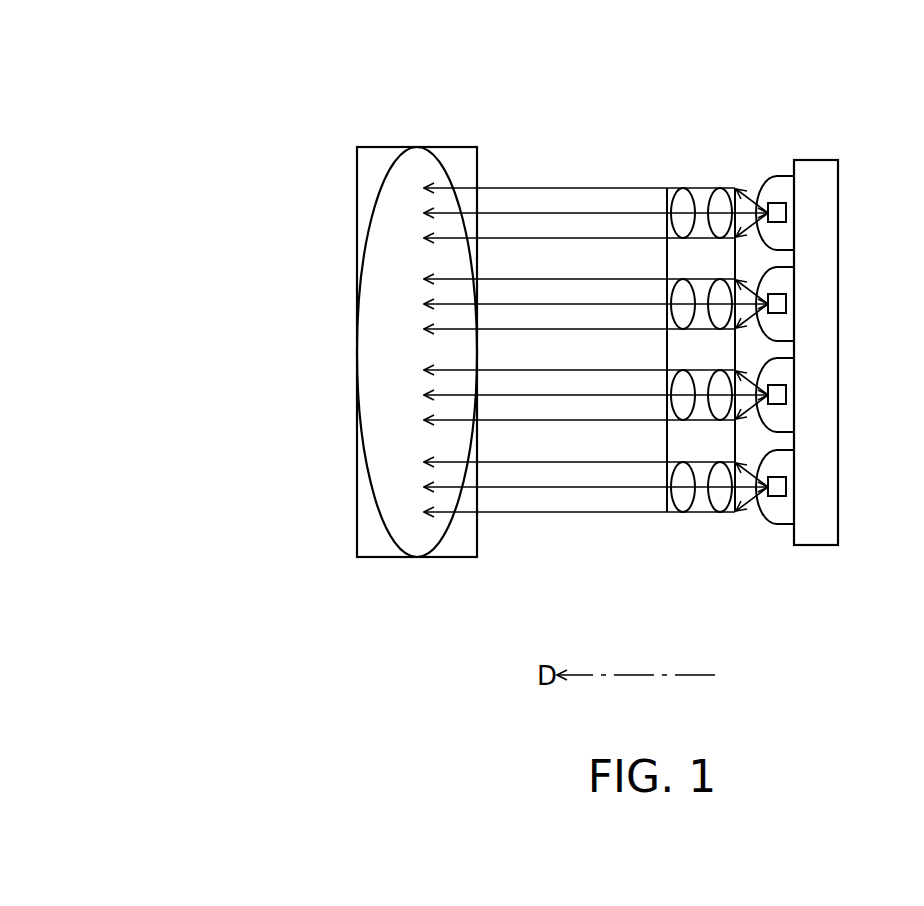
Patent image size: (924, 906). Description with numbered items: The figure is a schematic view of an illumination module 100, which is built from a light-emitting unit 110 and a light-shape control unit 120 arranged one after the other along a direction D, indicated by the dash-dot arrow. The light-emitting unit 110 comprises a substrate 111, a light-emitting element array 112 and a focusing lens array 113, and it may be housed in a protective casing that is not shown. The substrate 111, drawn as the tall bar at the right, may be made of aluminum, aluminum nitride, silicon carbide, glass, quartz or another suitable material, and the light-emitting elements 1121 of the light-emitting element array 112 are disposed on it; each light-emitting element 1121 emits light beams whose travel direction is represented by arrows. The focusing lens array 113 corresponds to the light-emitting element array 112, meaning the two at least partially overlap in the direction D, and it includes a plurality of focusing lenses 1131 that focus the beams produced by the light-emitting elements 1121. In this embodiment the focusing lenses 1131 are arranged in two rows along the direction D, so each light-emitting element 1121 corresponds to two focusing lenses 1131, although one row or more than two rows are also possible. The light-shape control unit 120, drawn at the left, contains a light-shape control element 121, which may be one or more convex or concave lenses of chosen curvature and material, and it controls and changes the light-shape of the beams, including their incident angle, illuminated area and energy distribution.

The illumination module 100 is at (50, 54).
The light-emitting unit 110 is at (667, 146).
The substrate 111 is at (830, 357).
The light-emitting element array 112 is at (833, 406).
The light-emitting element 1121 is at (778, 510).
The focusing lens array 113 is at (662, 387).
The focusing lens 1131 is at (705, 188).
The light-shape control unit 120 is at (366, 540).
The light-shape control element 121 is at (428, 540).